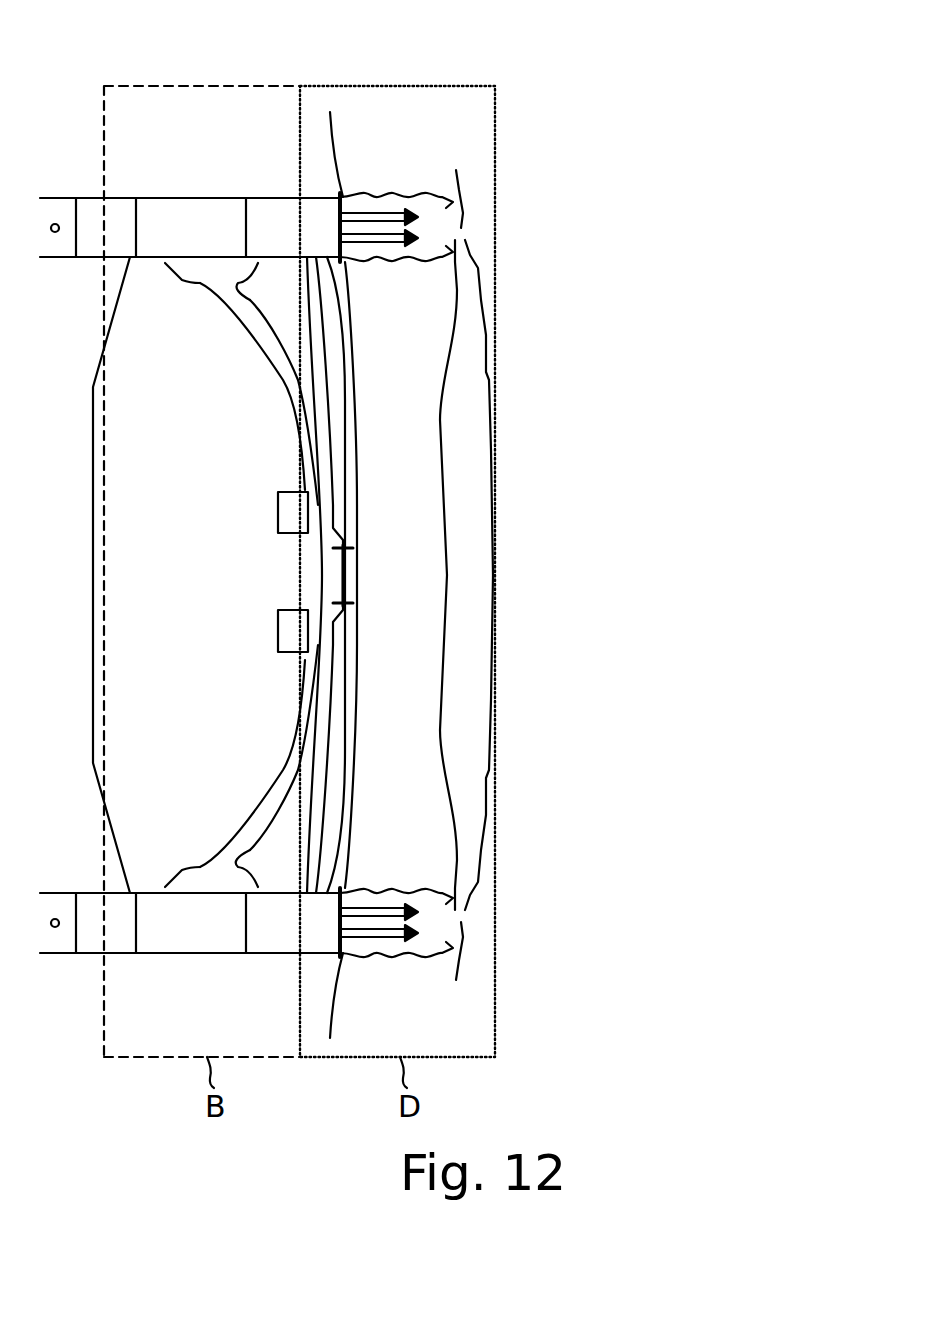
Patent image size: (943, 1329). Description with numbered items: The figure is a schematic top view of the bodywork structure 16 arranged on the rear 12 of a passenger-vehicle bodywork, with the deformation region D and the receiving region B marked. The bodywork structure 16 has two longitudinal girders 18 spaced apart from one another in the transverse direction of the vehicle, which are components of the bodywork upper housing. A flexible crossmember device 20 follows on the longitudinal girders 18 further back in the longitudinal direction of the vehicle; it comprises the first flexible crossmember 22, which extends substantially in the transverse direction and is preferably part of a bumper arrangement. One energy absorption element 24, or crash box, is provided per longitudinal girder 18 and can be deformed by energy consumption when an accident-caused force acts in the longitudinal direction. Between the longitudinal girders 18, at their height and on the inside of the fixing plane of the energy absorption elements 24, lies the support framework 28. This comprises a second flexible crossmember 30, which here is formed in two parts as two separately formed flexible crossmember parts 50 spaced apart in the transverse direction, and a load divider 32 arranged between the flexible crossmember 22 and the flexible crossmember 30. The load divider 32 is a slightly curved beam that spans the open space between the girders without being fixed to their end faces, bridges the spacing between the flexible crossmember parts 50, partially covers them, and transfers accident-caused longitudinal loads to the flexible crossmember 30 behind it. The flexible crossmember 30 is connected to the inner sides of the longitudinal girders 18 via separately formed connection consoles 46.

The rear 12 is at (552, 168).
The bodywork structure 16 is at (534, 116).
The longitudinal girder 18 is at (203, 221).
The flexible crossmember device 20 is at (456, 150).
The flexible crossmember 22 is at (473, 637).
The energy absorption element 24 is at (392, 262).
The support framework 28 is at (264, 888).
The second flexible crossmember 30 is at (265, 653).
The load divider 32 is at (350, 728).
The connection console 46 is at (180, 282).
The flexible crossmember part 50 is at (282, 368).